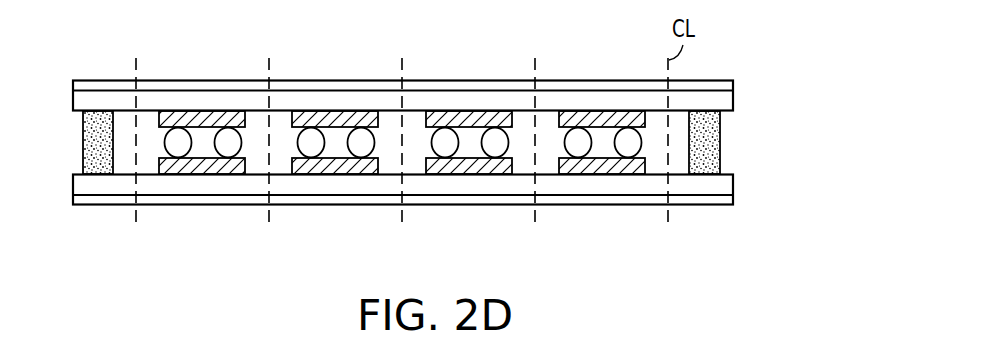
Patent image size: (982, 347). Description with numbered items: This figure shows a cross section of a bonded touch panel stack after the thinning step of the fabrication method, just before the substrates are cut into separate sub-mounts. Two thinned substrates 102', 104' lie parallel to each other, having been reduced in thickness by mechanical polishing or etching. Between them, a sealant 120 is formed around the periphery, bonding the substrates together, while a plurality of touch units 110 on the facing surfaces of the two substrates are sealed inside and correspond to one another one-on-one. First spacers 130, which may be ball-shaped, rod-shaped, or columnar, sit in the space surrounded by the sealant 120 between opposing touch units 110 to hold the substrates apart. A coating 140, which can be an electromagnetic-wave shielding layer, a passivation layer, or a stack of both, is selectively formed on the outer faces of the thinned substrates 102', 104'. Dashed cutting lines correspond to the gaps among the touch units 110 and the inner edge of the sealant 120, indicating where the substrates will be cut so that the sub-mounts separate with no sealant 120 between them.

The touch units 110 is at (600, 118).
The first spacers 130 is at (630, 143).
The sealant 120 is at (712, 127).
The thinned substrate 104' is at (446, 96).
The thinned substrate 102' is at (446, 183).
The coating 140 is at (732, 87).